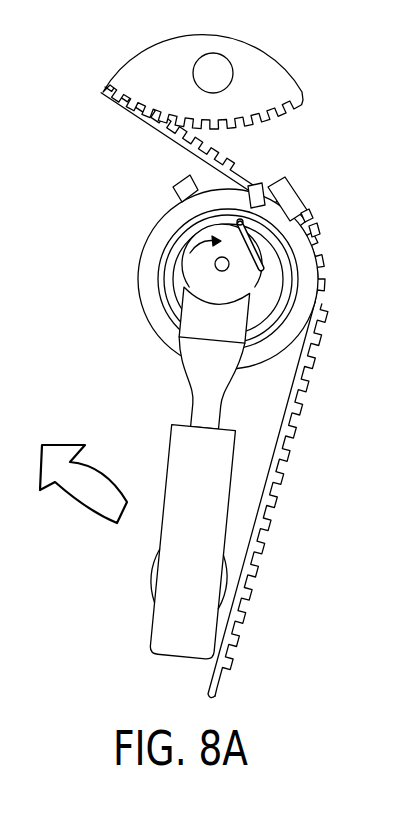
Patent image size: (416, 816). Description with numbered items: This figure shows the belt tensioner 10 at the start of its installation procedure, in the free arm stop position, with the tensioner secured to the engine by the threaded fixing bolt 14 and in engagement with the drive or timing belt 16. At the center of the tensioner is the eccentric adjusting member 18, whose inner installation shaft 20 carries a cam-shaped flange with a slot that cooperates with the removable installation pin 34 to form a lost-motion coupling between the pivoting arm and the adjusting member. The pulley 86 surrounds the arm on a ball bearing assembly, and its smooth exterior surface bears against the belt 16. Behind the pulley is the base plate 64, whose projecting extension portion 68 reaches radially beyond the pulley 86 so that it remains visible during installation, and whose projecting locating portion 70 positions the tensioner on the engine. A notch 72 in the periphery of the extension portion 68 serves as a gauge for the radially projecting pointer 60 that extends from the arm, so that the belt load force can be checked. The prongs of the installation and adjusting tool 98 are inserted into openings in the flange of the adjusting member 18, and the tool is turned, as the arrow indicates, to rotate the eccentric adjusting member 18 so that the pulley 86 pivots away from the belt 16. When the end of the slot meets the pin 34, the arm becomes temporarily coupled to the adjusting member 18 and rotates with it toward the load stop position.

The belt tensioner 10 is at (208, 279).
The threaded fixing bolt 14 is at (215, 265).
The drive or timing belt 16 is at (198, 683).
The eccentric adjusting member 18 is at (232, 228).
The installation shaft 20 is at (283, 197).
The installation pin 34 is at (232, 265).
The pointer 60 is at (250, 183).
The base plate 64 is at (178, 172).
The extension portion 68 is at (307, 210).
The locating portion 70 is at (175, 198).
The notch 72 is at (312, 225).
The pulley 86 is at (307, 307).
The installation and adjusting tool 98 is at (173, 628).